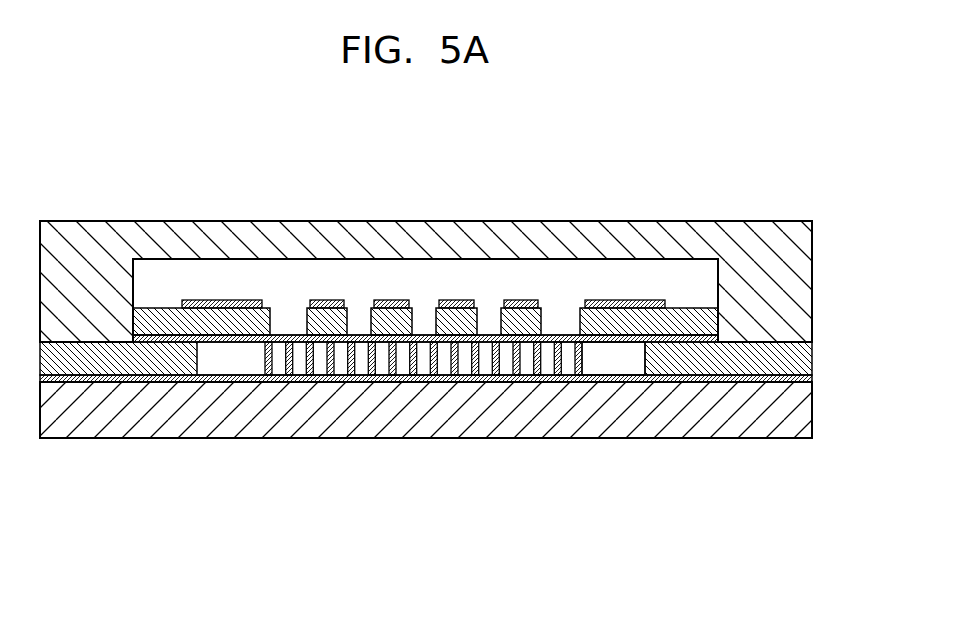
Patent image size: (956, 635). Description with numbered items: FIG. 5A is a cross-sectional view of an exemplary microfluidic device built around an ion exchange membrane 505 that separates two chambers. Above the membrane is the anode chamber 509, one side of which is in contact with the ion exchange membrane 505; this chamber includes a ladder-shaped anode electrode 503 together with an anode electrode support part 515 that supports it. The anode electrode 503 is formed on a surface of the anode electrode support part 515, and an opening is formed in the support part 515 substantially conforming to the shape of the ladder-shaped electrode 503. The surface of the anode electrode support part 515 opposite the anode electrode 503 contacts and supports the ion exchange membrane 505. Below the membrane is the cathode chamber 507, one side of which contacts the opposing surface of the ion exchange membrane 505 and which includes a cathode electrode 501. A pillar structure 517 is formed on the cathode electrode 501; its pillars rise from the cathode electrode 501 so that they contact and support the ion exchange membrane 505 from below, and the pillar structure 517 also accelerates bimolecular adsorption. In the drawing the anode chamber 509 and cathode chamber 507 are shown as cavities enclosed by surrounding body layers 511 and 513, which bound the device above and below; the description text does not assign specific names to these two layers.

The cathode electrode 501 is at (793, 378).
The anode electrode 503 is at (242, 300).
The ion exchange membrane 505 is at (722, 340).
The cathode chamber 507 is at (614, 360).
The anode chamber 509 is at (496, 277).
The housing / cap 511 is at (780, 272).
The base substrate 513 is at (790, 414).
The anode electrode support part 515 is at (167, 320).
The pillar structure 517 is at (265, 358).